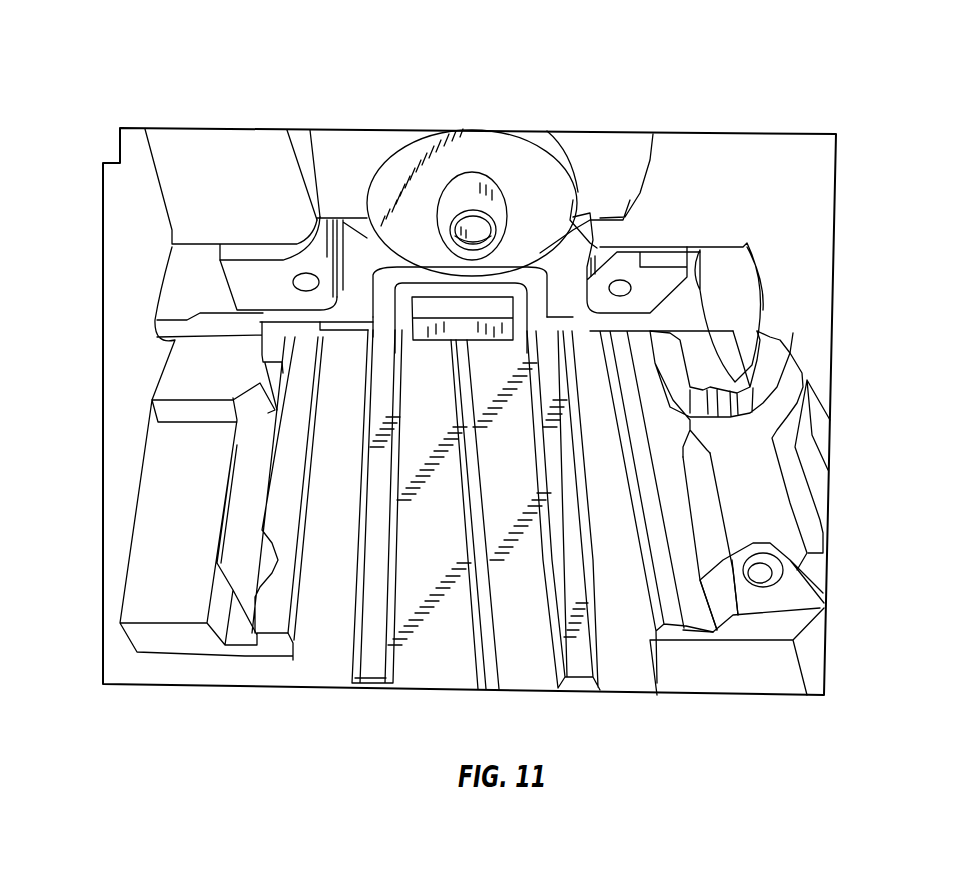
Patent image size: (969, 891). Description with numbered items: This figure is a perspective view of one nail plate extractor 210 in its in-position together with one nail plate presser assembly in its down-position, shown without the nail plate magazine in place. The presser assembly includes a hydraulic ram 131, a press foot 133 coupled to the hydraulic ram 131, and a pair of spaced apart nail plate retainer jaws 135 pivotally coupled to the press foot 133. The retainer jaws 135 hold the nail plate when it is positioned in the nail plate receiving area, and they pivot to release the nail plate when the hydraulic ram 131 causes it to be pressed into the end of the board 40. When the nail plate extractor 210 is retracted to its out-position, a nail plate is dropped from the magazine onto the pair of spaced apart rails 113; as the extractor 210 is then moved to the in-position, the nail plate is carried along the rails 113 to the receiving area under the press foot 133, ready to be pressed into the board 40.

The hydraulic ram 131 is at (327, 148).
The press foot 133 is at (360, 260).
The nail plate retainer jaws 135 is at (262, 280).
The board 40 is at (262, 330).
The rails 113 is at (287, 375).
The nail plate extractor 210 is at (368, 673).